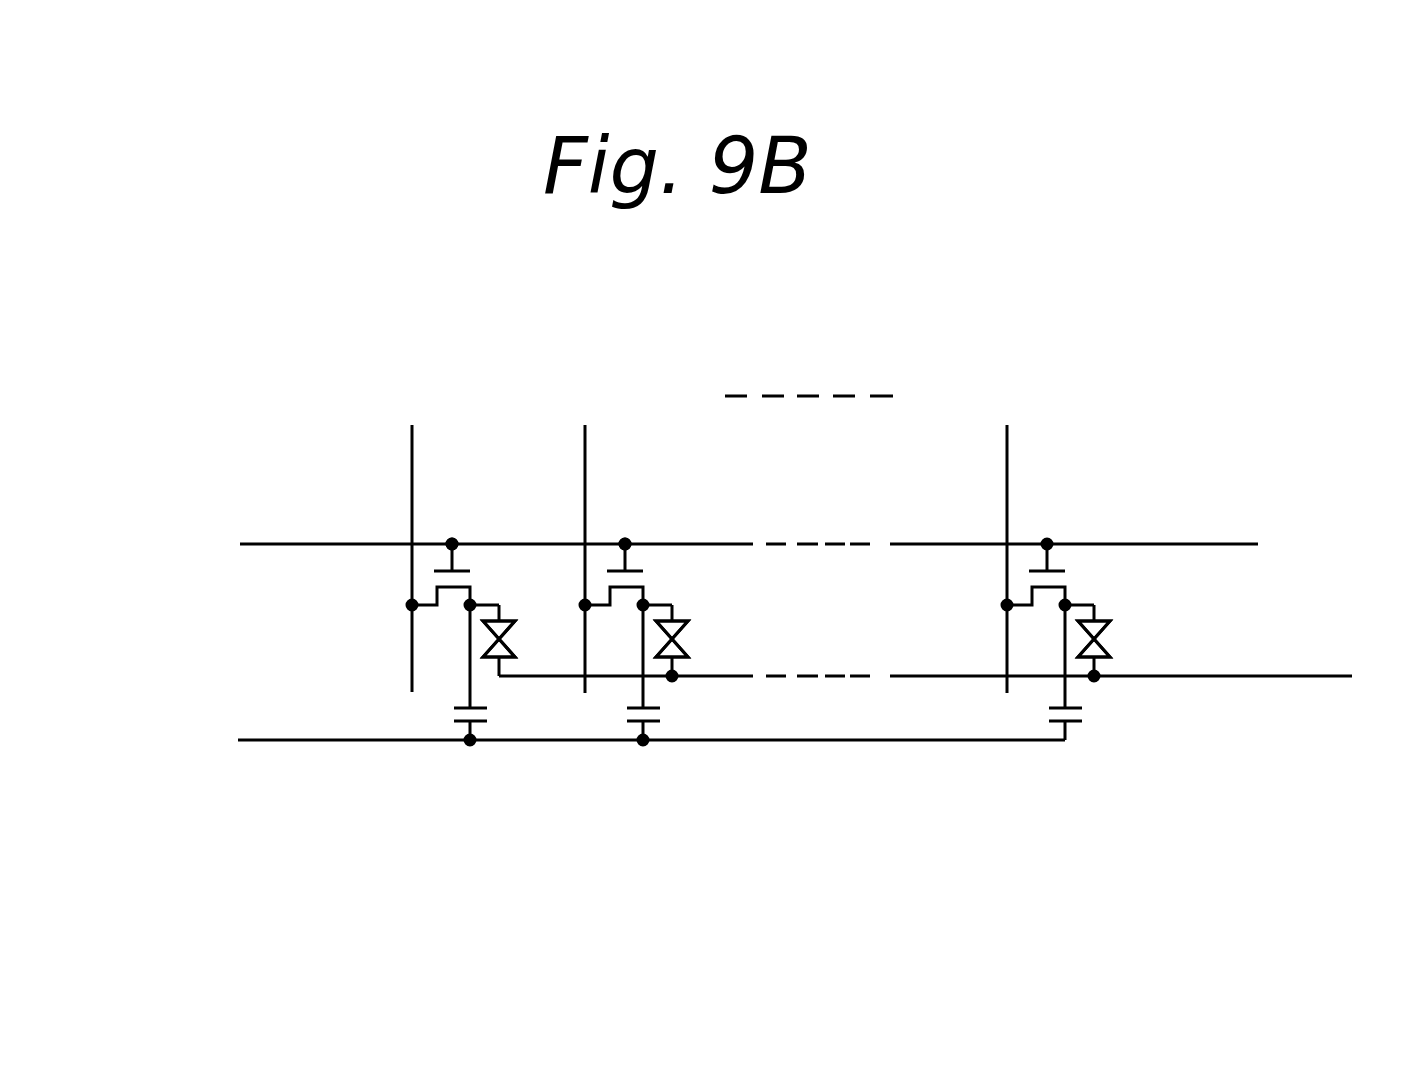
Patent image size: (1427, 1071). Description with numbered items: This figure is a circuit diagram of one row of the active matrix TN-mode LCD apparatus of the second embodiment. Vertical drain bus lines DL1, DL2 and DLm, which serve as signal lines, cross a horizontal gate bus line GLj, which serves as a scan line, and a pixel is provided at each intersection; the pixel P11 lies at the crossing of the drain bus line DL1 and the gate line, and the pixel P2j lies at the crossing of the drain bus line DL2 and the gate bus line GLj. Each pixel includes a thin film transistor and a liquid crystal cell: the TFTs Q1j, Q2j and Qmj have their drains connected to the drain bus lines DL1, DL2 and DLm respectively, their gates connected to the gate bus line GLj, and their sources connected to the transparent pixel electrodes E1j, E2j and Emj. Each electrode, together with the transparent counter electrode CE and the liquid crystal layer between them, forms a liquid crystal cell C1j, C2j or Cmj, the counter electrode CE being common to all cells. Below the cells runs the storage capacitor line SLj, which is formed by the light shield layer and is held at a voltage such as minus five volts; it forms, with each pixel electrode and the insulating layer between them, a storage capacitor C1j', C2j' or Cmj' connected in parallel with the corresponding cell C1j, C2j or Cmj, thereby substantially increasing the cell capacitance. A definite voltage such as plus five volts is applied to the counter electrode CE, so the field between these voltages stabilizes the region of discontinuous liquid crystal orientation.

The drain bus line DL1 is at (425, 535).
The drain bus line DL2 is at (594, 536).
The drain bus line DLm is at (1019, 536).
The gate bus line GLj is at (695, 540).
The storage capacitor line SLj is at (566, 737).
The counter electrode CE is at (956, 679).
The pixel P11 is at (451, 522).
The pixel P2j is at (791, 525).
The TFT Q1j is at (478, 596).
The TFT Q2j is at (646, 600).
The TFT Qmj is at (1068, 602).
The transparent pixel electrode E1j is at (502, 618).
The transparent pixel electrode E2j is at (675, 611).
The transparent pixel electrode Emj is at (1097, 612).
The liquid crystal cell C1j is at (525, 648).
The liquid crystal cell C2j is at (697, 651).
The liquid crystal cell Cmj is at (1126, 651).
The storage capacitor C1j' is at (444, 711).
The storage capacitor C2j' is at (617, 717).
The storage capacitor Cmj' is at (1088, 720).